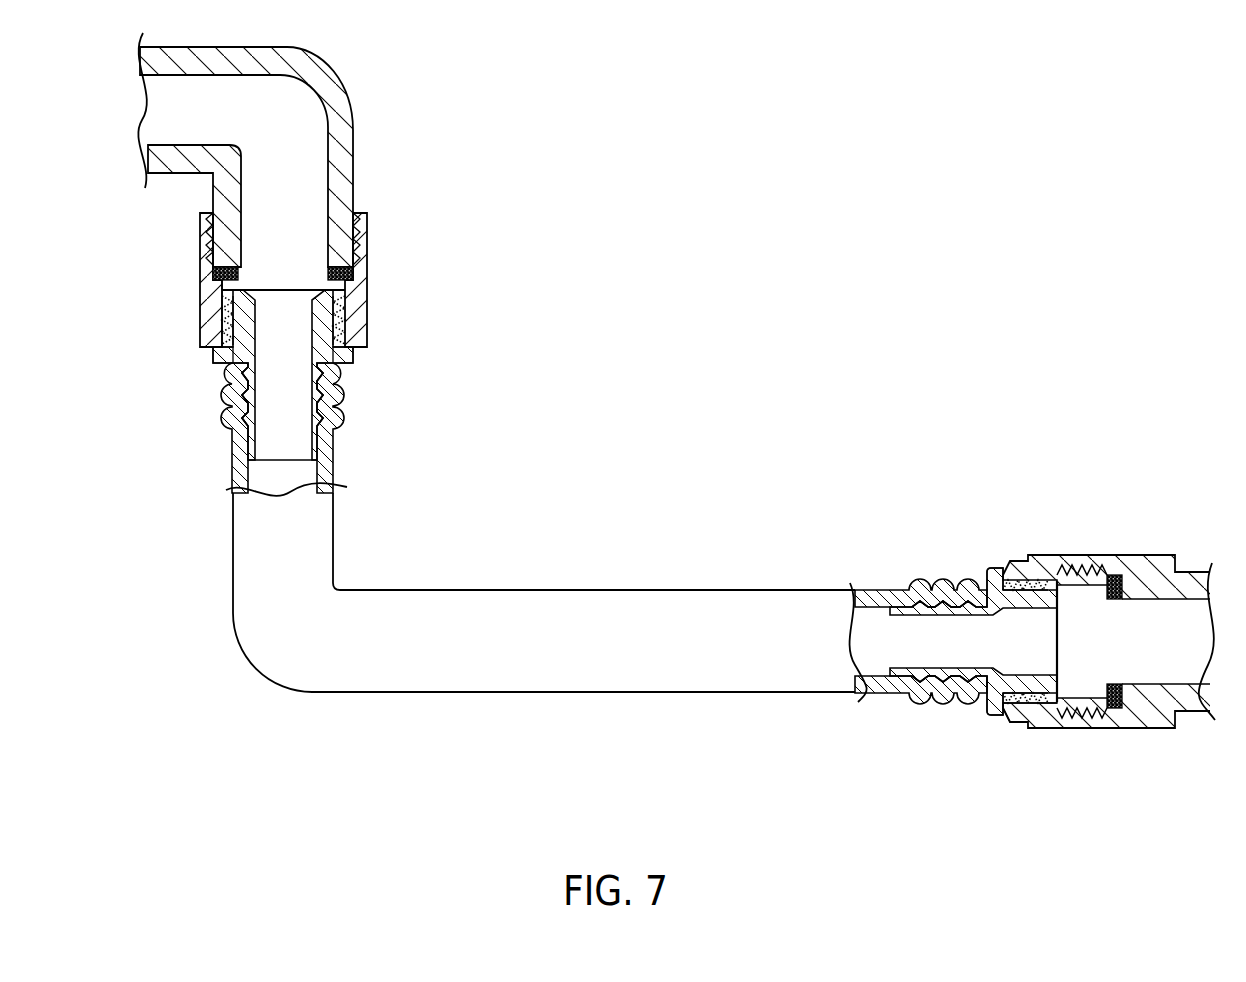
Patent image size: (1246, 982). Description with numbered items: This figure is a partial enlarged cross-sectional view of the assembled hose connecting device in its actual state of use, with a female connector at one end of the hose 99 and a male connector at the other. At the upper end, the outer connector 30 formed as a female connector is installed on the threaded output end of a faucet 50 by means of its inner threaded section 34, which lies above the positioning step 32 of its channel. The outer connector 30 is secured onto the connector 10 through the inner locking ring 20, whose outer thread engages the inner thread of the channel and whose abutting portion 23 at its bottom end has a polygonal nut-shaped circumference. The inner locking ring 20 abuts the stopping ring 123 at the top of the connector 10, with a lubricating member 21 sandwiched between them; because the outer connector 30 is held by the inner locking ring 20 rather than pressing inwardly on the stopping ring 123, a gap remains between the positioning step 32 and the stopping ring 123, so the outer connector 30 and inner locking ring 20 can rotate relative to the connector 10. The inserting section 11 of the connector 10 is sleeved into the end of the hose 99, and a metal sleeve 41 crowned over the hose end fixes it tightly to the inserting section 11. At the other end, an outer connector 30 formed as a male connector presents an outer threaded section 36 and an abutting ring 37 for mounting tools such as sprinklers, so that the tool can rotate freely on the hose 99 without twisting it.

The connector 10 is at (208, 313).
The inserting section 11 is at (230, 407).
The inner locking ring 20 is at (200, 352).
The lubricating member 21 is at (335, 303).
The abutting portion 23 is at (357, 356).
The outer connector 30 is at (384, 232).
The positioning step 32 is at (338, 266).
The inner threaded section 34 is at (367, 256).
The outer threaded section 36 is at (1082, 565).
The abutting ring 37 is at (1010, 721).
The metal sleeve 41 is at (338, 402).
The faucet 50 is at (337, 115).
The pipe 99 is at (378, 532).
The stopping ring 123 is at (223, 298).